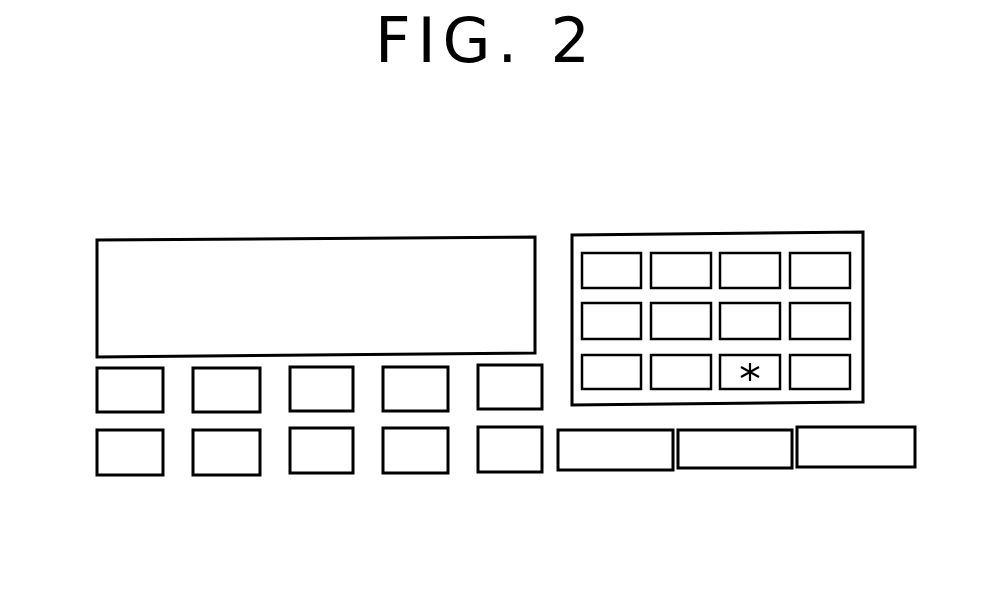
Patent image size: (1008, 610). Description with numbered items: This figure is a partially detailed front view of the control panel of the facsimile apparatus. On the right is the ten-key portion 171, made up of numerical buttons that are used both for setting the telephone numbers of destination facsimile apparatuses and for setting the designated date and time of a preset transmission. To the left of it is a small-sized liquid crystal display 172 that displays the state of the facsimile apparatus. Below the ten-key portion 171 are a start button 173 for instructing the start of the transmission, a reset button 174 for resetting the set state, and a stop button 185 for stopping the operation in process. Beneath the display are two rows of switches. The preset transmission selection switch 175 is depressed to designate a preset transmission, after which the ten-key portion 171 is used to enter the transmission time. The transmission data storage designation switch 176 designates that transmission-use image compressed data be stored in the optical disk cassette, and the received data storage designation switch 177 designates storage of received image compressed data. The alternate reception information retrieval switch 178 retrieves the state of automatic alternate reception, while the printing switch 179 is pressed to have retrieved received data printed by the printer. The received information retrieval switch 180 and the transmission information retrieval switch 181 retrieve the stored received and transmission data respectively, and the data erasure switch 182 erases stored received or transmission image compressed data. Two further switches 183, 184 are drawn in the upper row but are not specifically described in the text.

The ten-key portion 171 is at (822, 232).
The liquid crystal display 172 is at (262, 241).
The start button 173 is at (627, 470).
The reset button 174 is at (747, 468).
The preset transmission selection switch 175 is at (122, 475).
The transmission data storage designation switch 176 is at (230, 475).
The received data storage designation switch 177 is at (325, 473).
The alternate reception information retrieval switch 178 is at (420, 473).
The printing switch 179 is at (517, 472).
The received information retrieval switch 180 is at (97, 392).
The transmission information retrieval switch 181 is at (193, 410).
The data erasure switch 182 is at (290, 413).
The key 183 is at (383, 405).
The key 184 is at (478, 405).
The stop button 185 is at (865, 467).